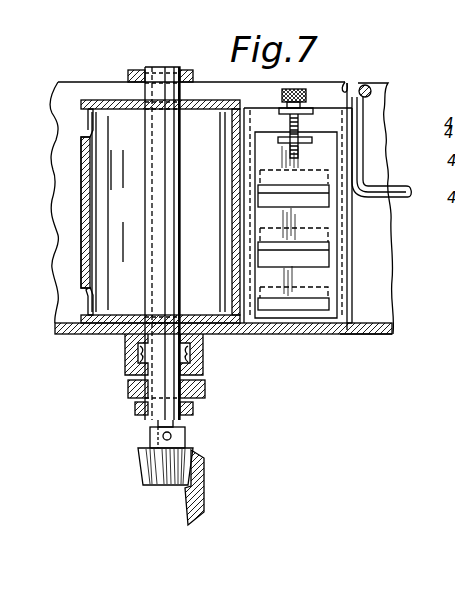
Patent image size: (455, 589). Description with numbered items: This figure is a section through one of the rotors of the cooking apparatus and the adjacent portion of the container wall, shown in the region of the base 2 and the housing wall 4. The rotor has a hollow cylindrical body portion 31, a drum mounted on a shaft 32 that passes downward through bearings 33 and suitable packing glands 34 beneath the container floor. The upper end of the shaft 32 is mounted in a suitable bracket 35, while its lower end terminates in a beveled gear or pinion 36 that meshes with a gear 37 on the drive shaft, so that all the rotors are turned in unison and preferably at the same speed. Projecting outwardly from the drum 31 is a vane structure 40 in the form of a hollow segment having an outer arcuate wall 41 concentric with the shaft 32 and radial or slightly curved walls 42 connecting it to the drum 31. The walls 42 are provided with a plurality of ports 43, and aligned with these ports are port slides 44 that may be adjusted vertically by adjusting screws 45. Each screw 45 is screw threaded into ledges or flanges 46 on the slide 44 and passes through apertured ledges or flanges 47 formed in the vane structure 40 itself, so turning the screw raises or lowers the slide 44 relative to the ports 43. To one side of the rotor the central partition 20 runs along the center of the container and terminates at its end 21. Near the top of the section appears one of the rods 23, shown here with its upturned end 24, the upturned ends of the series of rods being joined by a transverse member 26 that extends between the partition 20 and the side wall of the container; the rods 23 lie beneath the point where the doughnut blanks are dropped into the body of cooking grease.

The base plate 2 is at (355, 335).
The housing wall 4 is at (67, 95).
The central partition 20 is at (385, 92).
The partition end 21 is at (346, 83).
The rods 23 is at (400, 191).
The upturned ends 24 is at (368, 152).
The transverse member 26 is at (370, 88).
The hollow cylindrical body portion 31 is at (93, 100).
The shaft 32 is at (176, 263).
The bearings 33 is at (125, 350).
The packing glands 34 is at (205, 355).
The bracket 35 is at (184, 72).
The beveled gear or pinion 36 is at (140, 480).
The gear 37 is at (206, 492).
The vane structure 40 is at (358, 238).
The outer arcuate wall 41 is at (355, 268).
The radial walls 42 is at (349, 323).
The ports 43 is at (320, 190).
The port slides 44 is at (330, 277).
The adjusting screws 45 is at (298, 135).
The ledges or flanges 46 is at (283, 135).
The apertured ledges or flanges 47 is at (300, 106).